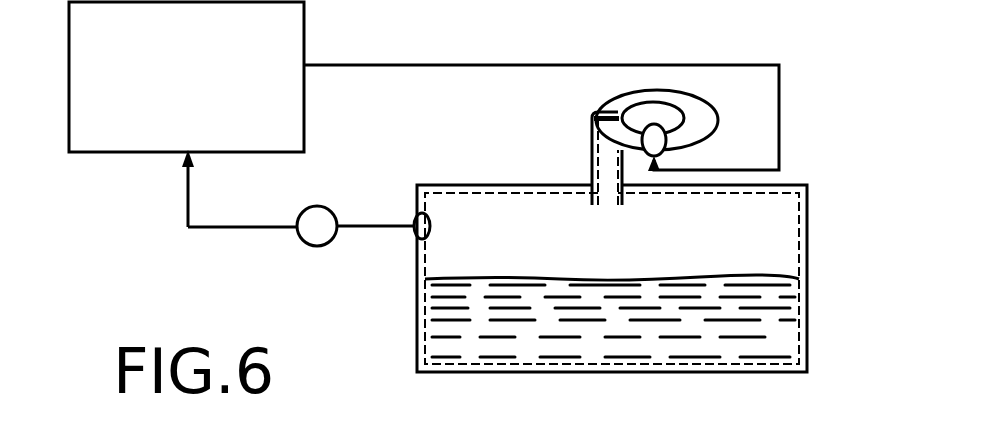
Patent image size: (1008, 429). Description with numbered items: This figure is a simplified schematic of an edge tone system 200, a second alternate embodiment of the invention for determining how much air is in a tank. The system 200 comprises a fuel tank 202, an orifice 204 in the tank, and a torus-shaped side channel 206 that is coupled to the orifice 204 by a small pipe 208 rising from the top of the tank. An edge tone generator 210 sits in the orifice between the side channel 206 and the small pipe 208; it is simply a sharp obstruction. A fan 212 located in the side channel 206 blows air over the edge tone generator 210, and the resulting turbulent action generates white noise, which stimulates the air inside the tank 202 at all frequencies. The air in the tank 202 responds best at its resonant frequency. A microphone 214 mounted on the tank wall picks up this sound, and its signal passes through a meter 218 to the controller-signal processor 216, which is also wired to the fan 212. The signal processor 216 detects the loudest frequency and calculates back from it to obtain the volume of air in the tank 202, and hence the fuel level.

The edge tone system 200 is at (659, 291).
The fuel tank 202 is at (653, 373).
The orifice 204 is at (571, 163).
The torus-shaped side channel 206 is at (690, 95).
The small pipe 208 is at (592, 166).
The edge tone generator 210 is at (606, 112).
The fan 212 is at (666, 150).
The microphone 214 is at (414, 237).
The signal processor 216 is at (88, 153).
The voltmeter 218 is at (300, 238).